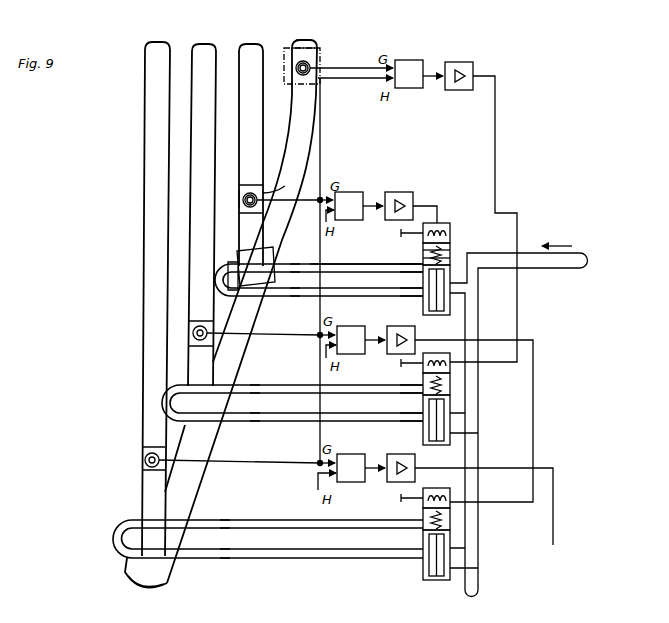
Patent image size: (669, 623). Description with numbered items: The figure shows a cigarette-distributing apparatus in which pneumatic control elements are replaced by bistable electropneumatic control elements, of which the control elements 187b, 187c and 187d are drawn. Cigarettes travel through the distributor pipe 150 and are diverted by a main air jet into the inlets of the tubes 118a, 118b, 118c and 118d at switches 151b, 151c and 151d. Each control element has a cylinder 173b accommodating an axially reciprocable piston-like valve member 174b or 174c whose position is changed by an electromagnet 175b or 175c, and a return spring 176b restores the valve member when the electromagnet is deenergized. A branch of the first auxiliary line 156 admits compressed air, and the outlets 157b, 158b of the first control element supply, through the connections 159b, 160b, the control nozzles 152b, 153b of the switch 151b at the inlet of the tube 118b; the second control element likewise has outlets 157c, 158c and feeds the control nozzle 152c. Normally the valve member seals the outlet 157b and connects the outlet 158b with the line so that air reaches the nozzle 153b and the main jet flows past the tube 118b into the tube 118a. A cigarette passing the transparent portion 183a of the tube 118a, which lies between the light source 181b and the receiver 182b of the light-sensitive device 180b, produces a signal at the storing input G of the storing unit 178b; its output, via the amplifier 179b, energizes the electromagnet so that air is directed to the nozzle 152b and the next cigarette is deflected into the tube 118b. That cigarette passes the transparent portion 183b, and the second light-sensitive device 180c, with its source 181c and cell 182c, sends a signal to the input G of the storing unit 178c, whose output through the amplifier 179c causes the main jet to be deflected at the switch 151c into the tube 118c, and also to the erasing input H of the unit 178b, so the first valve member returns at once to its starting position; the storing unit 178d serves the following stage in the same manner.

The tube 118a is at (298, 46).
The tube 118b is at (252, 46).
The tube 118c is at (207, 46).
The tube 118d is at (160, 46).
The distributor pipe 150 is at (158, 570).
The switch 151b is at (283, 253).
The switch 151c is at (225, 388).
The switch 151d is at (170, 521).
The control nozzle 152b is at (290, 262).
The control nozzle 152c is at (240, 386).
The control nozzle 153b is at (240, 252).
The first auxiliary line 156 is at (566, 270).
The outlet 157b is at (418, 266).
The outlet 157c is at (418, 396).
The outlet 158b is at (423, 300).
The outlet 158c is at (423, 428).
The connection 159b is at (350, 265).
The connection 160b is at (295, 295).
The cylinder 173b is at (455, 257).
The valve member 174b is at (452, 300).
The valve member 174c is at (452, 420).
The electromagnet 175b is at (446, 222).
The electromagnet 175c is at (452, 380).
The return spring 176b is at (455, 247).
The storing unit 178b is at (408, 62).
The storing unit 178c is at (358, 192).
The storing unit 178d is at (358, 322).
The amplifier 179b is at (452, 64).
The amplifier 179c is at (404, 192).
The light-sensitive device 180b is at (312, 58).
The light-sensitive device 180c is at (234, 186).
The source of light 181b is at (304, 76).
The source of light 181c is at (245, 204).
The receiver 182b is at (320, 82).
The receiver 182c is at (250, 192).
The transparent portion 183a is at (304, 50).
The transparent portion 183b is at (287, 179).
The bistable electropneumatic control element 187b is at (422, 288).
The bistable electropneumatic control element 187c is at (422, 414).
The bistable electropneumatic control element 187d is at (422, 552).